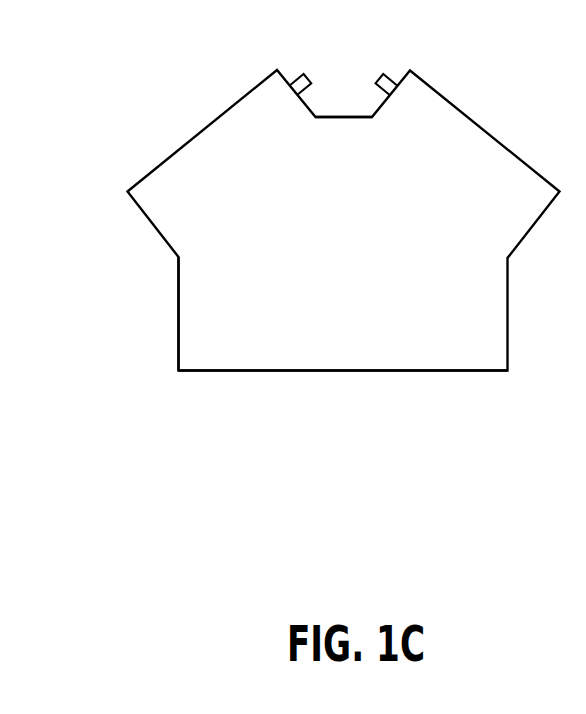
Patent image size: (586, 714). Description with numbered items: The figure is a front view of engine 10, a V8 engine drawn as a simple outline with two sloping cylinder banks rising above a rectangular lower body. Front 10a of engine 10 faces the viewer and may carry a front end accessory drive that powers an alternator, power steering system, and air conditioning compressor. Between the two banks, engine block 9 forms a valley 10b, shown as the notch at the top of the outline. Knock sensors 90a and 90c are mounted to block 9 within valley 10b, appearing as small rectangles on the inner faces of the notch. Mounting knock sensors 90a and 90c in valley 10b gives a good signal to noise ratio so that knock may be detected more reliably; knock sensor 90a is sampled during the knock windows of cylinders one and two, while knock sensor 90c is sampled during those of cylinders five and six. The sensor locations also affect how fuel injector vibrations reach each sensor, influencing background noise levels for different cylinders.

The engine block 9 is at (147, 280).
The engine 10 is at (141, 182).
The front of engine 10a is at (333, 343).
The valley 10b is at (336, 132).
The knock sensor 90a is at (309, 77).
The knock sensor 90c is at (378, 78).